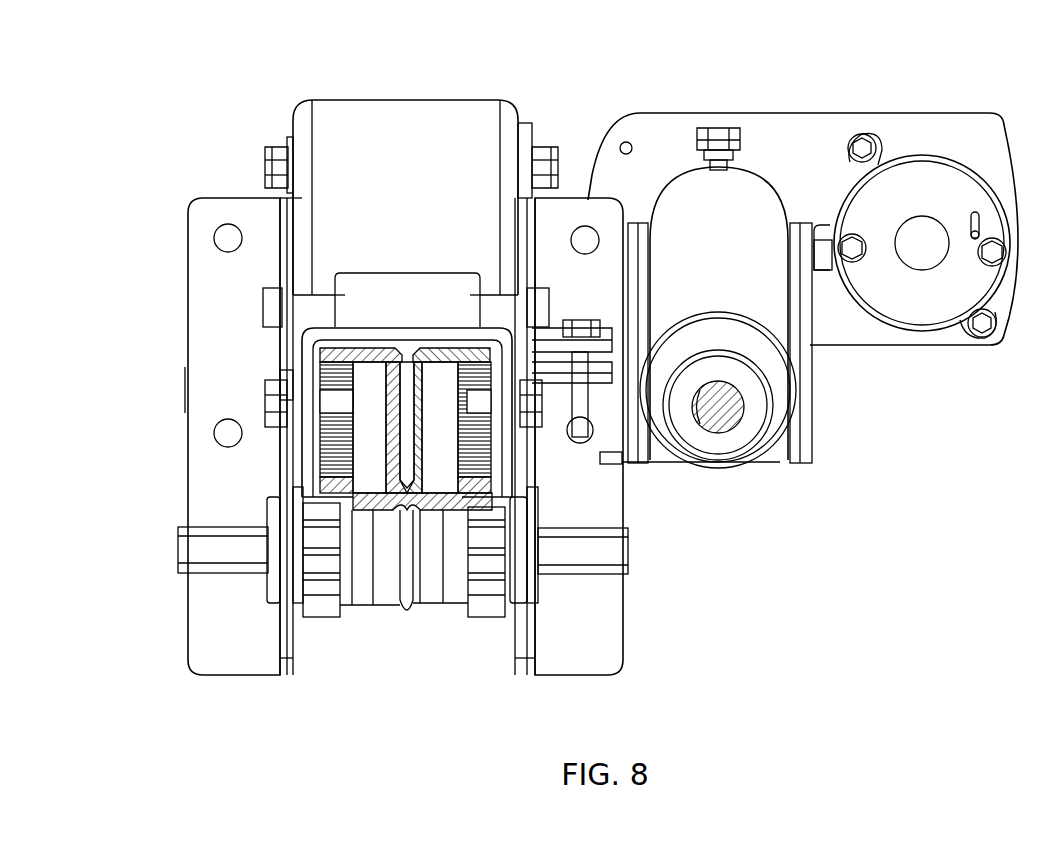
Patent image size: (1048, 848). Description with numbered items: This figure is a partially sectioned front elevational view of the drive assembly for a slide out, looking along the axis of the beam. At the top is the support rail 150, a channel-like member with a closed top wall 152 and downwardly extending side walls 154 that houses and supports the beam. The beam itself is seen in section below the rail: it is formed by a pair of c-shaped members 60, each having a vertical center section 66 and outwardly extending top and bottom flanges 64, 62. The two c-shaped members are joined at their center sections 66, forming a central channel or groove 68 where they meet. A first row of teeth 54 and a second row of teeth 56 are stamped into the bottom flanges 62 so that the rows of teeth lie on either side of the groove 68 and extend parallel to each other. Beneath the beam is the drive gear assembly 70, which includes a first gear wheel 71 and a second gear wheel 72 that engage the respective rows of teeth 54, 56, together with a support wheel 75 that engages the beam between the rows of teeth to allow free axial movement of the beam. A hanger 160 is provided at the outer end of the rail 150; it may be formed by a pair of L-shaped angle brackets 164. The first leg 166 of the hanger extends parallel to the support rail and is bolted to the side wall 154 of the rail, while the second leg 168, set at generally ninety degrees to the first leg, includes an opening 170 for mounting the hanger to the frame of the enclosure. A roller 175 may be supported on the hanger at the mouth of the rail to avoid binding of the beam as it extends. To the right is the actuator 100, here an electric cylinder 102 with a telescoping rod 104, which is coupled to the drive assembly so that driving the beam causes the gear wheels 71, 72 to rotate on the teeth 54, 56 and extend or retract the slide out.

The first row of teeth 54 is at (480, 490).
The second row of teeth 56 is at (320, 490).
The c-shaped members 60 is at (368, 355).
The bottom flange 62 is at (373, 508).
The top flange 64 is at (333, 355).
The vertical center section 66 is at (398, 428).
The central channel or groove 68 is at (422, 513).
The drive gear assembly 70 is at (320, 624).
The first gear wheel 71 is at (488, 610).
The second gear wheel 72 is at (330, 607).
The support wheel 75 is at (403, 617).
The actuator 100 is at (768, 150).
The electric cylinder 102 is at (760, 243).
The telescoping rod 104 is at (735, 420).
The support rail 150 is at (411, 164).
The closed top wall 152 is at (340, 128).
The side walls 154 is at (300, 358).
The hanger 160 is at (404, 362).
The L-shaped angle brackets 164 is at (205, 322).
The first leg 166 is at (290, 380).
The second leg 168 is at (200, 447).
The opening 170 is at (224, 236).
The roller 175 is at (408, 290).